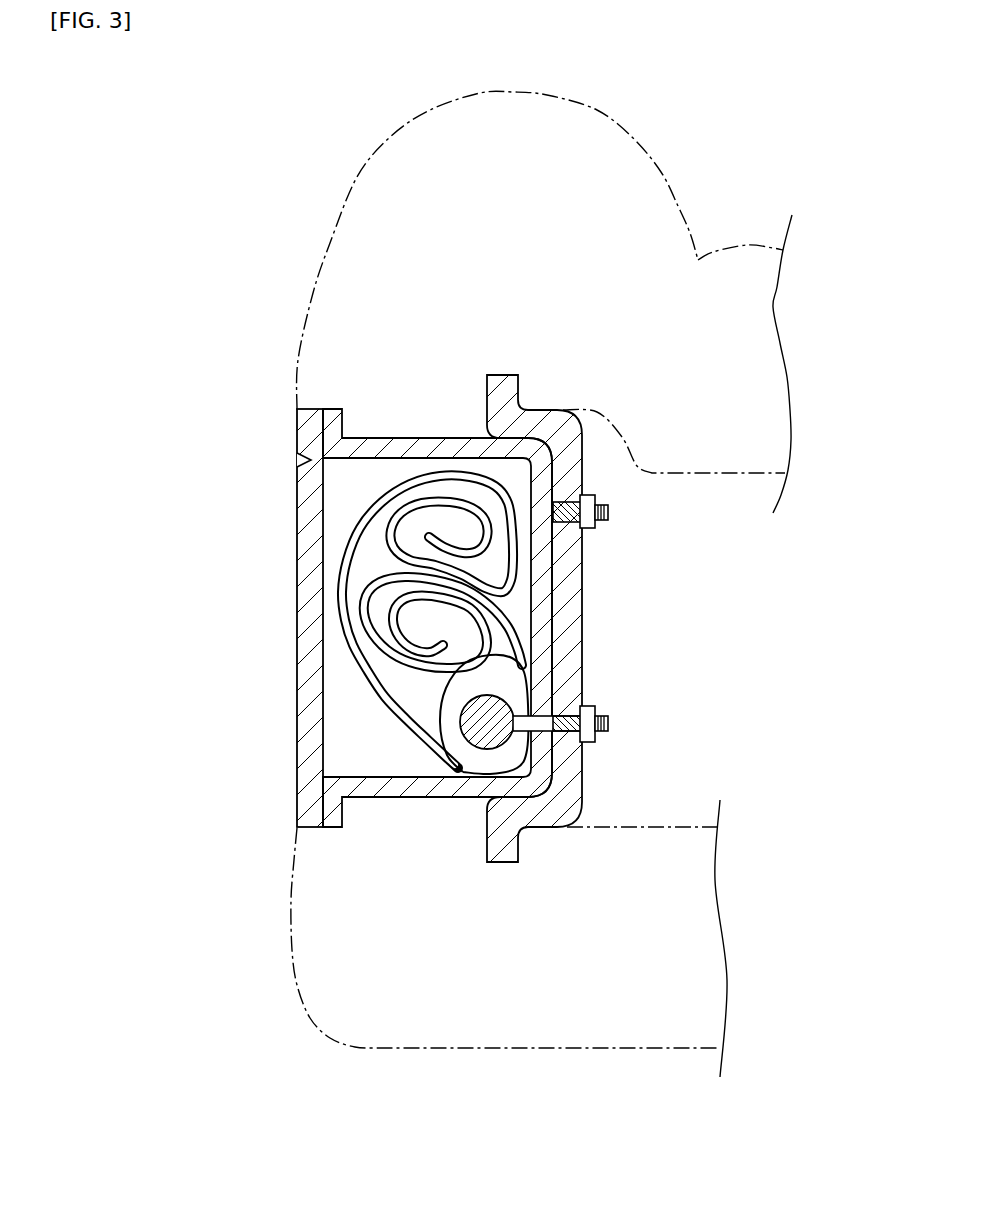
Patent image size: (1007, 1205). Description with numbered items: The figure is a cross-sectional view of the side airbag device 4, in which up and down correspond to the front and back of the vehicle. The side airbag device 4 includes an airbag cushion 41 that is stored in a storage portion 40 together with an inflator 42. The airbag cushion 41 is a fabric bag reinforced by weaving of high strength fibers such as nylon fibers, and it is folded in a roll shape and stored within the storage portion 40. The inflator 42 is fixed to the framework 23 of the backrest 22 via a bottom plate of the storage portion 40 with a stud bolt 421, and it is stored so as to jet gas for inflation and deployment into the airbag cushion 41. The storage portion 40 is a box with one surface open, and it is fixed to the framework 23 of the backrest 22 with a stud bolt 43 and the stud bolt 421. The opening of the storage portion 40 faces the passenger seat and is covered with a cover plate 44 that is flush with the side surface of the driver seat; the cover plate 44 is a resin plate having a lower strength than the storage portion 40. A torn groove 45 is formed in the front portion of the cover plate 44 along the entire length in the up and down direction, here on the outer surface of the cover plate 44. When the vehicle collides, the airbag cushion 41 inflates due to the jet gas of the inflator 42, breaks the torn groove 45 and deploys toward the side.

The side airbag device 4 is at (249, 676).
The backrest 22 is at (593, 107).
The framework 23 is at (498, 863).
The storage portion 40 is at (407, 799).
The airbag cushion 41 is at (381, 699).
The inflator 42 is at (505, 700).
The stud bolt 421 is at (610, 722).
The stud bolt 43 is at (610, 513).
The cover plate 44 is at (305, 566).
The torn groove 45 is at (297, 459).